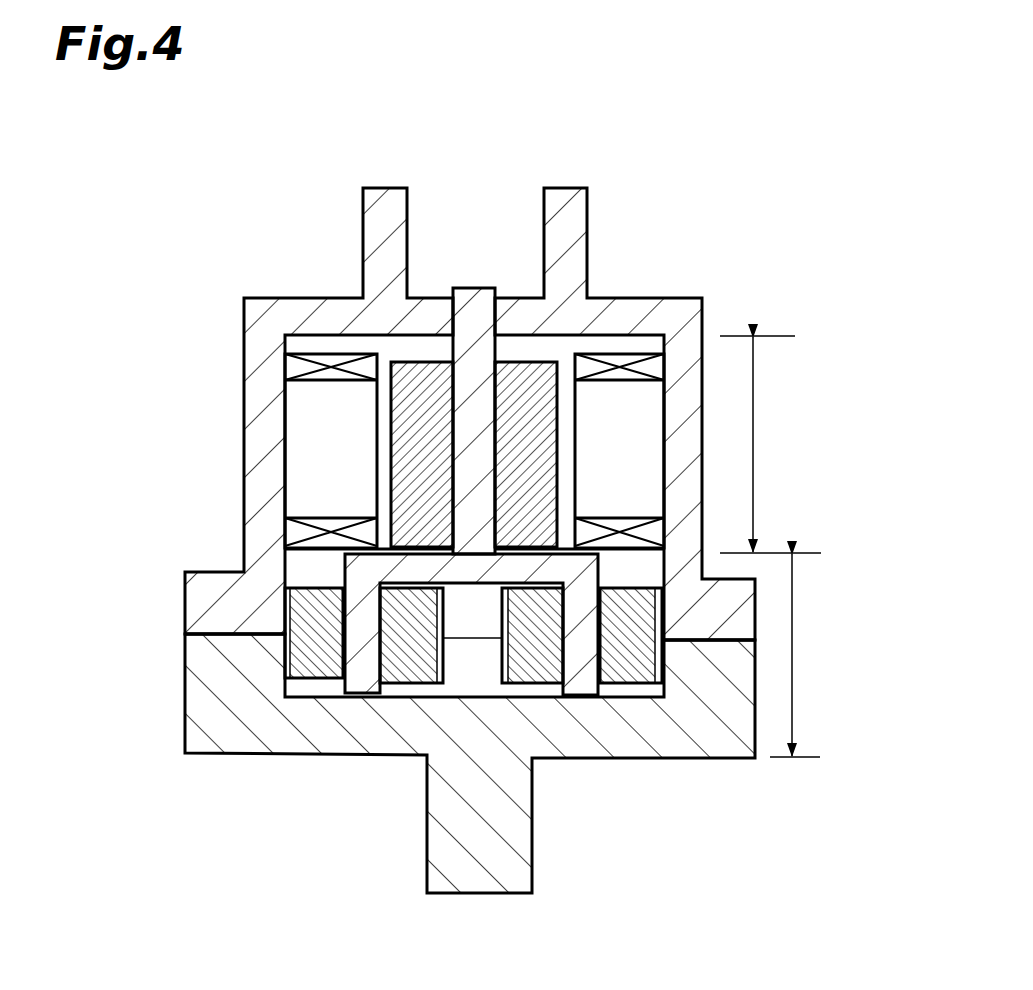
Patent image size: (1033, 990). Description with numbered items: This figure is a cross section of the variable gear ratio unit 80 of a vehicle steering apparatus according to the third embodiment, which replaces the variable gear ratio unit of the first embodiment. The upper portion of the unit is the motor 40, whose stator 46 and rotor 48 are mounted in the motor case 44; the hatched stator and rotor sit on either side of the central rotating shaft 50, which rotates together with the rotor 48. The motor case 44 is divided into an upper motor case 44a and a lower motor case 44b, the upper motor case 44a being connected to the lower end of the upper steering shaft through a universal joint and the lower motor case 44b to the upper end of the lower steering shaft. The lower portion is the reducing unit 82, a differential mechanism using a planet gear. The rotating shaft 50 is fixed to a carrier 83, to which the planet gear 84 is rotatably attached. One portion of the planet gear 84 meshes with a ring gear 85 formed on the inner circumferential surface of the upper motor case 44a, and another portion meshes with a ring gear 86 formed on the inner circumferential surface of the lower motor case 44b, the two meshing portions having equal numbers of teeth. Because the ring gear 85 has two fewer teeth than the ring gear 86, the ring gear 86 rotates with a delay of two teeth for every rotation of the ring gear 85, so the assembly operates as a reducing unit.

The variable gear ratio unit 80 is at (264, 216).
The motor 40 is at (753, 388).
The motor case 44 is at (453, 540).
The upper motor case 44a is at (248, 363).
The lower motor case 44b is at (212, 737).
The stator 46 is at (300, 435).
The rotor 48 is at (433, 360).
The rotating shaft 50 is at (480, 296).
The reducing unit 82 is at (792, 697).
The carrier 83 is at (357, 678).
The planet gear 84 is at (303, 672).
The ring gear 85 is at (238, 603).
The ring gear 86 is at (252, 660).